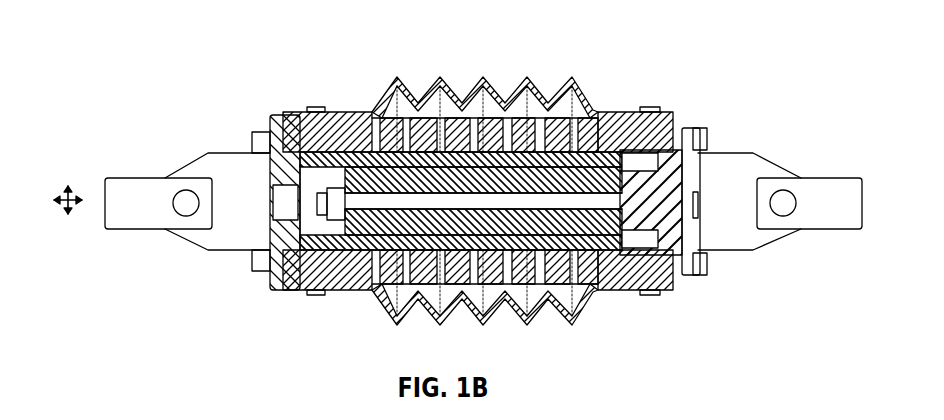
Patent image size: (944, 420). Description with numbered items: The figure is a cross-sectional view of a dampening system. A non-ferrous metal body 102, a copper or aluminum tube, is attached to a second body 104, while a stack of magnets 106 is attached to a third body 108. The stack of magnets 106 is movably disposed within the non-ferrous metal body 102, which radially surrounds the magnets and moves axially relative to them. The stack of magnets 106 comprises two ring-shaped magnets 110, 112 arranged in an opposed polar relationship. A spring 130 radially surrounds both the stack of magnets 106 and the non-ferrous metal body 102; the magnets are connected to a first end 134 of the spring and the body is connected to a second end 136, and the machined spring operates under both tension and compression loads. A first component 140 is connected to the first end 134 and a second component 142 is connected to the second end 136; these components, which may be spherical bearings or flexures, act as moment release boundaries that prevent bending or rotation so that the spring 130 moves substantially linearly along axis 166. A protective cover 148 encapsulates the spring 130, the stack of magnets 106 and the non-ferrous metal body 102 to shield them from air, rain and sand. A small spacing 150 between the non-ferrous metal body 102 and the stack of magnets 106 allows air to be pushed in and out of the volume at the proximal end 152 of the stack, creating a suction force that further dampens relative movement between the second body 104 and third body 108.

The non-ferrous metal body 102 is at (373, 117).
The second body 104 is at (128, 178).
The stack of magnets 106 is at (613, 128).
The third body 108 is at (825, 178).
The magnet 110 is at (362, 265).
The magnet 112 is at (587, 303).
The spring 130 is at (578, 170).
The first end of the spring 134 is at (667, 120).
The second end of the spring 136 is at (300, 110).
The first component 140 is at (753, 167).
The second component 142 is at (195, 167).
The protective cover 148 is at (483, 93).
The spacing 150 is at (335, 118).
The proximal end of the stack of magnets 152 is at (313, 220).
The axis 166 is at (80, 192).